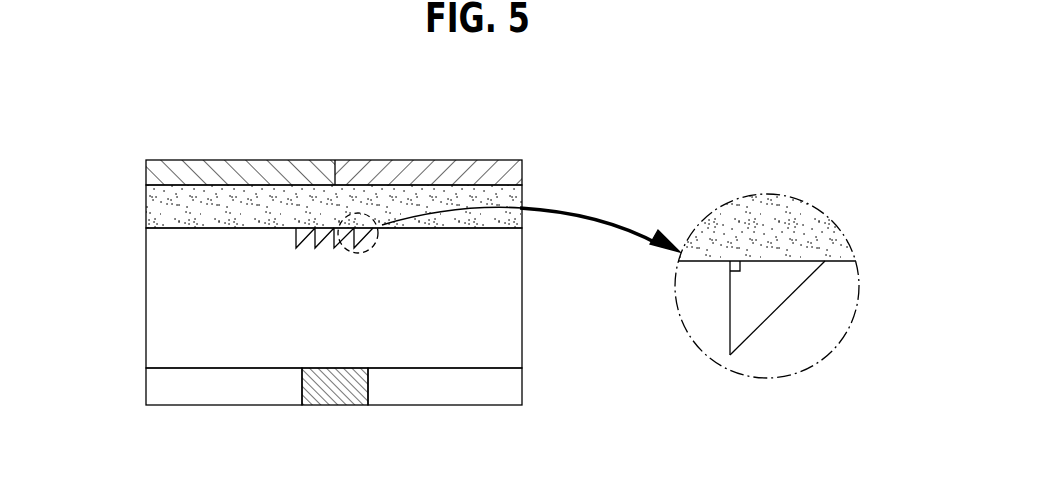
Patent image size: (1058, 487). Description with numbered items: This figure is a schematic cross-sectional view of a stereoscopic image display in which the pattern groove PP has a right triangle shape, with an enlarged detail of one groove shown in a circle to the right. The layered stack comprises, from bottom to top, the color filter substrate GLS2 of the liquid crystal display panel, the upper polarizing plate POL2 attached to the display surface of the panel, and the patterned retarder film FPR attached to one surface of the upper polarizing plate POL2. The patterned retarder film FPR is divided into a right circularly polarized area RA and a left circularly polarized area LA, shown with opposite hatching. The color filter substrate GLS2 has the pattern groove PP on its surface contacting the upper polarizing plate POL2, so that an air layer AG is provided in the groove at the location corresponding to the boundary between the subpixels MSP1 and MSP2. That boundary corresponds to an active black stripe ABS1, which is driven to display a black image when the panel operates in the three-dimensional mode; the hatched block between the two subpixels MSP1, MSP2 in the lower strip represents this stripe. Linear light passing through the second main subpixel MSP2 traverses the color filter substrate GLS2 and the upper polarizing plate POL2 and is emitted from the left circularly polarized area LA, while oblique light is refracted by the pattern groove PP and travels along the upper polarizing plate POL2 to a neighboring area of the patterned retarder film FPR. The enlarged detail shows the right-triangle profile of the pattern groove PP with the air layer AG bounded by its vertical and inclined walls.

The right circularly polarized area RA is at (226, 165).
The left circularly polarized area LA is at (424, 165).
The patterned retarder film FPR is at (370, 146).
The upper polarizing plate POL2 is at (148, 206).
The color filter substrate GLS2 is at (512, 322).
The subpixel MSP1 is at (157, 384).
The second main subpixel MSP2 is at (512, 388).
The active black stripe ABS1 is at (336, 392).
The air layer AG is at (298, 240).
The pattern groove PP is at (372, 248).